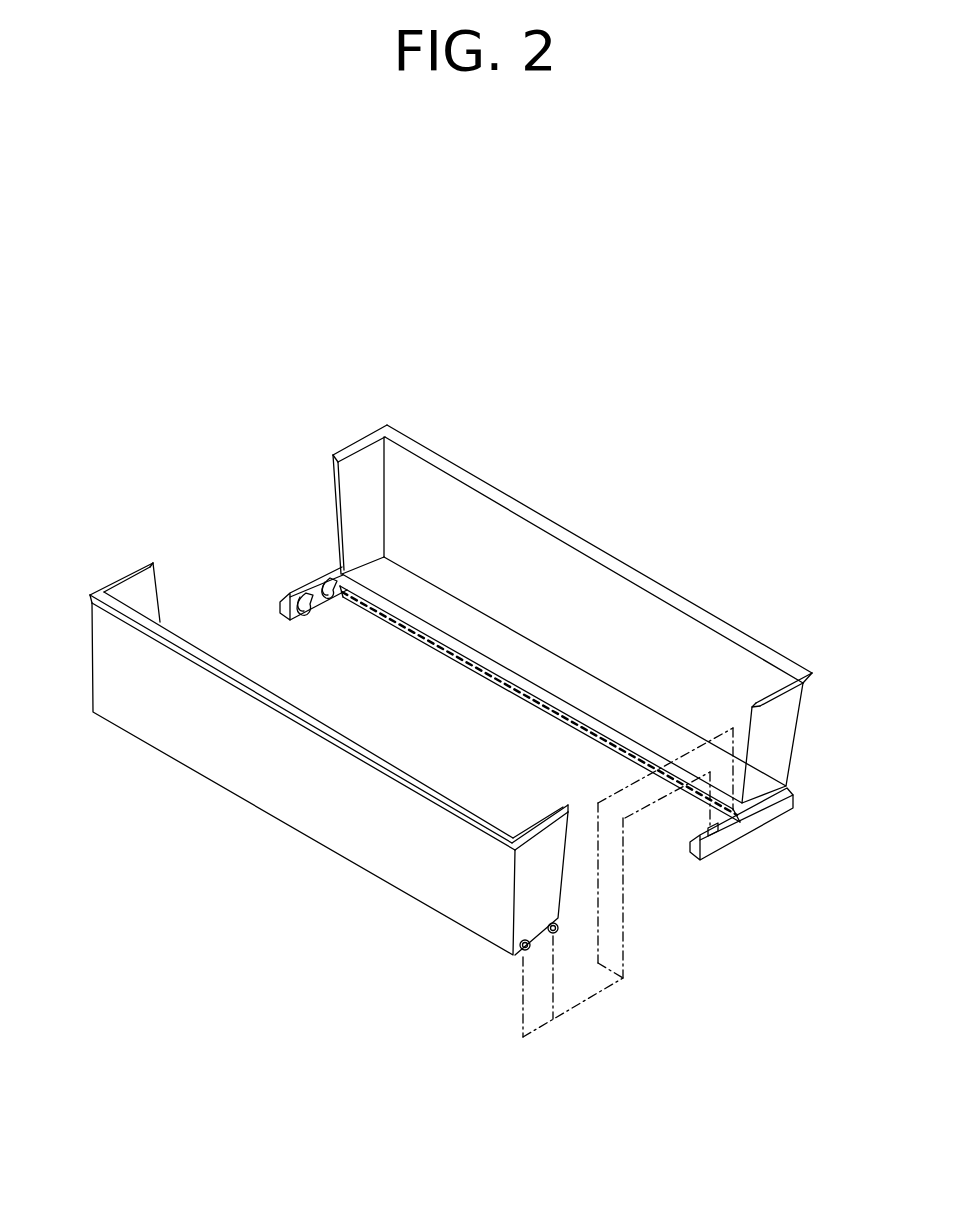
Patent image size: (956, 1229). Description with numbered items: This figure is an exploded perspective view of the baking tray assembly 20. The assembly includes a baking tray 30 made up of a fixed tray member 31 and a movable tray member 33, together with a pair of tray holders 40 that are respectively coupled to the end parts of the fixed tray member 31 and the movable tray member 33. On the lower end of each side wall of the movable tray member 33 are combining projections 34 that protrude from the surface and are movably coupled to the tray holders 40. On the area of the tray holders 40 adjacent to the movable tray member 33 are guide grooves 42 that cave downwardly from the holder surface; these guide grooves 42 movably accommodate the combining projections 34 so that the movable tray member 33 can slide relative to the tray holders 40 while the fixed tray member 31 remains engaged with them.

The baking tray assembly 20 is at (618, 475).
The baking tray 30 is at (185, 431).
The fixed tray member 31 is at (367, 440).
The movable tray member 33 is at (117, 577).
The combining projections 34 is at (527, 949).
The tray holders 40 is at (788, 810).
The guide grooves 42 is at (323, 578).